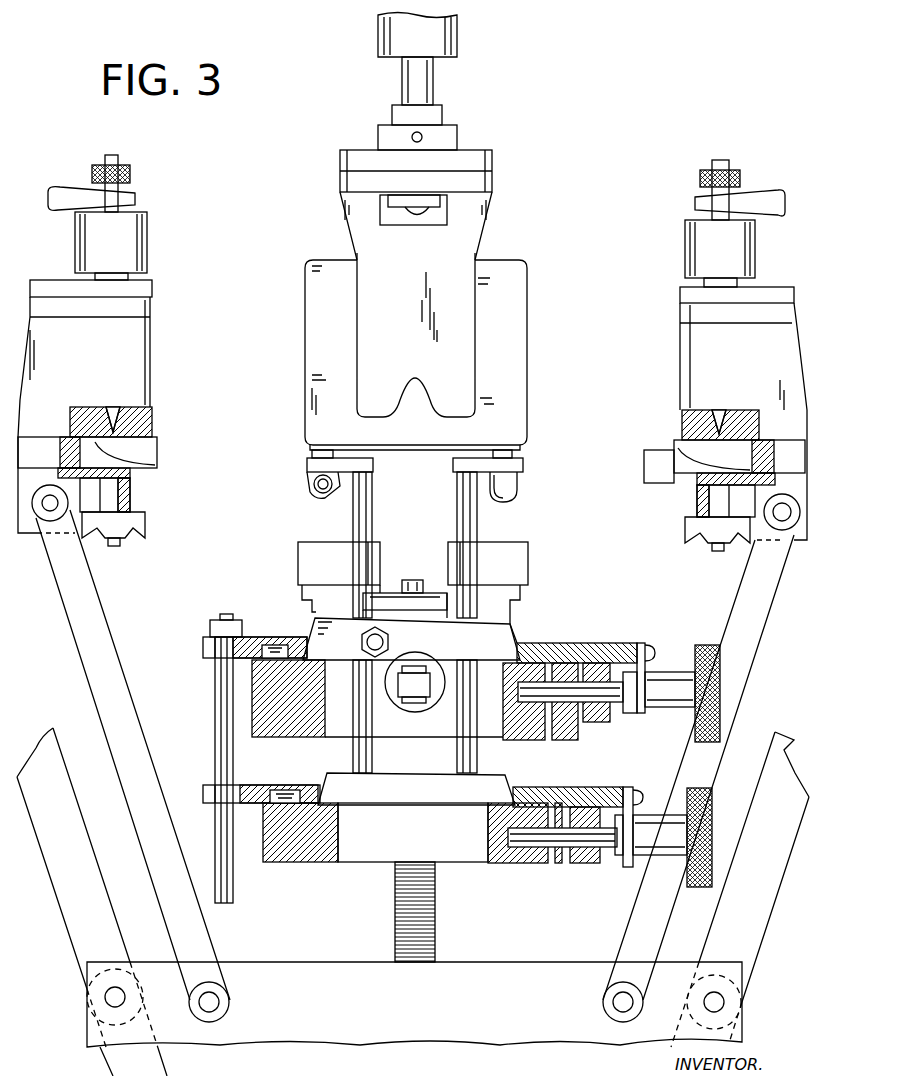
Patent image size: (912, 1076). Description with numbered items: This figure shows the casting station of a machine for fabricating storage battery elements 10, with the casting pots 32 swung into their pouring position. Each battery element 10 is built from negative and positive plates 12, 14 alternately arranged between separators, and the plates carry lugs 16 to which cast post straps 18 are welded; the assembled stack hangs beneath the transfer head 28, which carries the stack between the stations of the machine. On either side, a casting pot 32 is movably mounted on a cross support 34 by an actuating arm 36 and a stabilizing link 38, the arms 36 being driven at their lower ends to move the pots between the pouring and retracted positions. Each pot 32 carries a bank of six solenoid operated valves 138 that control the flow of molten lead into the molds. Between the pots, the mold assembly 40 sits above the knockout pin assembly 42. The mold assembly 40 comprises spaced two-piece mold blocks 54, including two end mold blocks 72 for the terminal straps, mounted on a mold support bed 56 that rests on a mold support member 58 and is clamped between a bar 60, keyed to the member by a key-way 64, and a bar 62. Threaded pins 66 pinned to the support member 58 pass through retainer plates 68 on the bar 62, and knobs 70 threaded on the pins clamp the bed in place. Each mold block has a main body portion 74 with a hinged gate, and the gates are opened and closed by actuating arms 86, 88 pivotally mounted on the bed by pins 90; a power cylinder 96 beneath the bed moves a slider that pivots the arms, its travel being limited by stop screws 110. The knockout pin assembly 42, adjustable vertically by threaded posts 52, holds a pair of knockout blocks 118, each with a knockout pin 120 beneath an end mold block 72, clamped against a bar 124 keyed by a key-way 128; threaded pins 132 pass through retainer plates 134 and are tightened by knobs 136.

The storage battery element 10 is at (540, 292).
The negative plate 12 is at (510, 382).
The positive plate 14 is at (387, 452).
The lug 16 is at (325, 455).
The post strap 18 is at (305, 484).
The transfer head 28 is at (491, 142).
The casting pot 32 is at (133, 333).
The cross support 34 is at (267, 977).
The actuating arm 36 is at (80, 927).
The stabilizing link 38 is at (80, 680).
The mold assembly 40 is at (561, 602).
The knockout pin assembly 42 is at (430, 812).
The threaded post 52 is at (407, 915).
The mold block 54 is at (290, 556).
The mold support bed 56 is at (505, 637).
The mold support member 58 is at (262, 697).
The bar 60 is at (258, 640).
The bar 62 is at (592, 643).
The key-way 64 is at (277, 648).
The threaded pin 66 is at (528, 702).
The retainer plate 68 is at (640, 717).
The knob 70 is at (707, 653).
The end mold block 72 is at (517, 565).
The main body portion 74 is at (326, 553).
The actuating arm 86 is at (440, 600).
The end actuating arm 88 is at (392, 603).
The pin 90 is at (413, 581).
The power cylinder 96 is at (420, 707).
The stop screw 110 is at (360, 645).
The knockout block 118 is at (463, 807).
The knockout pin 120 is at (360, 767).
The bar 124 is at (255, 785).
The key-way 128 is at (288, 786).
The threaded pin 132 is at (528, 836).
The retainer plate 134 is at (630, 860).
The knob 136 is at (709, 833).
The solenoid operated valve 138 is at (108, 415).